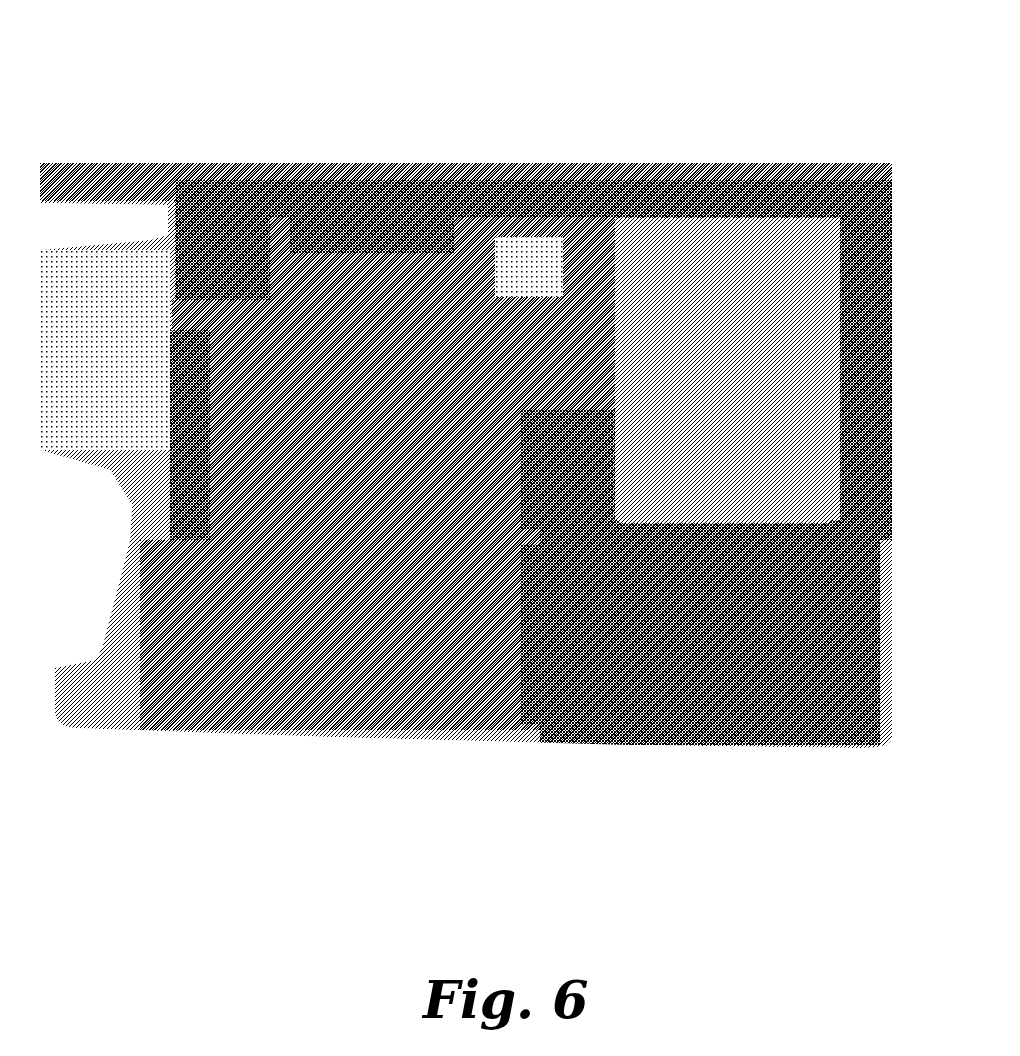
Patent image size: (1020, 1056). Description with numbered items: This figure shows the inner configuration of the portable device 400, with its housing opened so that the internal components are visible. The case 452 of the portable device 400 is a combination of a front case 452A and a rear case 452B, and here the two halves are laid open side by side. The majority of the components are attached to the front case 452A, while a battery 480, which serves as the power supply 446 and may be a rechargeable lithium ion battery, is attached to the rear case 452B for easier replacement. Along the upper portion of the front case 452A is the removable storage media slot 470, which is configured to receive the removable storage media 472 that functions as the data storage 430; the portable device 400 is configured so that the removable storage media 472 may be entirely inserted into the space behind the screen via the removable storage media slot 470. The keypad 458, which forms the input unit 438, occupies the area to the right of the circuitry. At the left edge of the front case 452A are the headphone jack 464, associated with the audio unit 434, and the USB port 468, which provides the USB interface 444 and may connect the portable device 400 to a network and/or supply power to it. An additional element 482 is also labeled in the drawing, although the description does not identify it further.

The portable device 400 is at (666, 32).
The case 452 is at (173, 197).
The front case 452A is at (236, 176).
The rear case 452B is at (220, 722).
The removable storage media slot 470 is at (533, 152).
The data storage 430 is at (350, 186).
The removable storage media 472 is at (407, 222).
The keypad 458 is at (743, 327).
The input unit 438 is at (724, 257).
The headphone jack 464 is at (150, 267).
The audio unit 434 is at (169, 252).
The USB port 468 is at (146, 351).
The USB interface 444 is at (181, 334).
The battery 480 is at (579, 660).
The power supply 446 is at (600, 700).
The board 482 is at (355, 635).